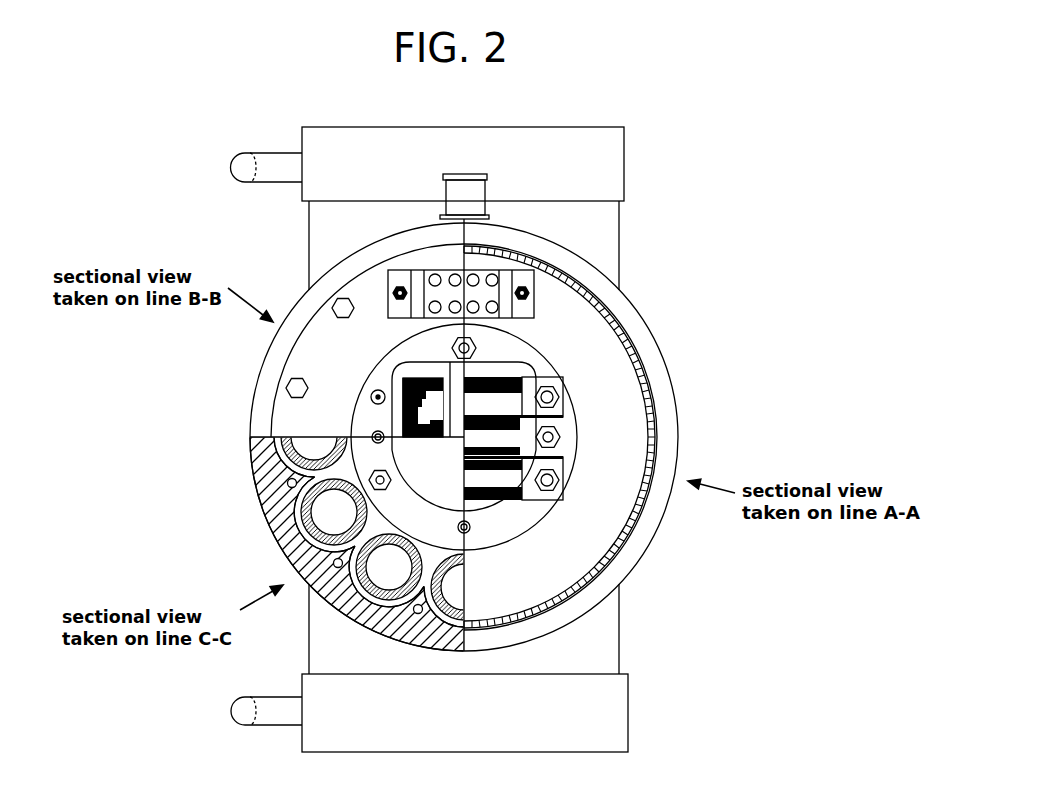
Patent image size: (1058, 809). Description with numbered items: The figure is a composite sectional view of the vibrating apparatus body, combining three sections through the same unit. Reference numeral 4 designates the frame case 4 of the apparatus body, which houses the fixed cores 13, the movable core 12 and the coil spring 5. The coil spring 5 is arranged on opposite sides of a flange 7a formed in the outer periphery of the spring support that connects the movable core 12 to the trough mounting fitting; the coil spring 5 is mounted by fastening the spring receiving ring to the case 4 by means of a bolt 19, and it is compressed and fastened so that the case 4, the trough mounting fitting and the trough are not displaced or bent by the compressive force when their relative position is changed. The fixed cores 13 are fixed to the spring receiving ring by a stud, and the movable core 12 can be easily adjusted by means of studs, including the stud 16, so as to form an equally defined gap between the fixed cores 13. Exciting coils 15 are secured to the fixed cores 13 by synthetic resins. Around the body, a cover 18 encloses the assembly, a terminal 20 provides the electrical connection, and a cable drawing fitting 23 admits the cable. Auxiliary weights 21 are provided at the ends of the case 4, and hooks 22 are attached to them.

The frame case 4 is at (620, 267).
The coil spring 5 is at (300, 513).
The flange 7a is at (335, 603).
The movable core 12 is at (503, 502).
The fixed core 13 is at (403, 396).
The exciting coil 15 is at (408, 364).
The stud 16 is at (390, 478).
The cover 18 is at (632, 329).
The bolt 19 is at (287, 388).
The terminal 20 is at (491, 271).
The auxiliary weight 21 is at (625, 178).
The hook 22 is at (241, 184).
The cable drawing fitting 23 is at (466, 176).